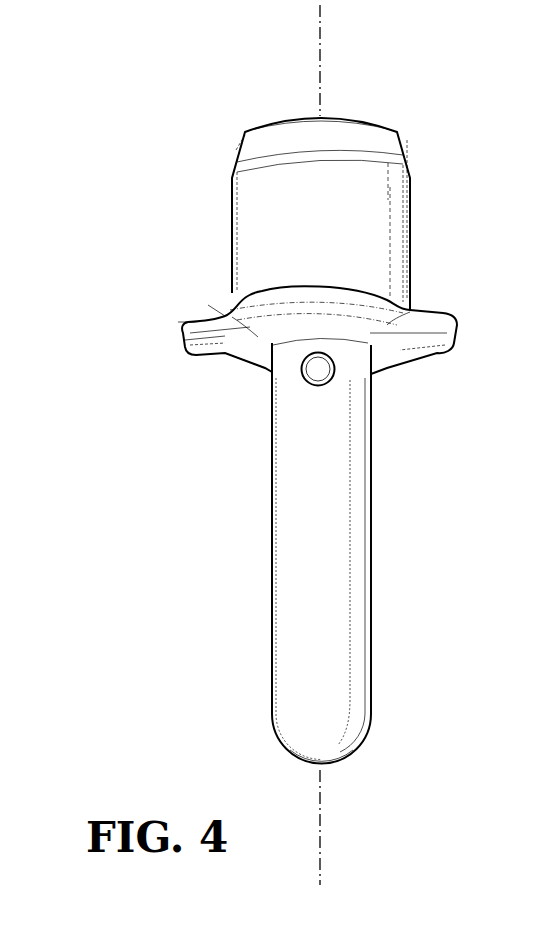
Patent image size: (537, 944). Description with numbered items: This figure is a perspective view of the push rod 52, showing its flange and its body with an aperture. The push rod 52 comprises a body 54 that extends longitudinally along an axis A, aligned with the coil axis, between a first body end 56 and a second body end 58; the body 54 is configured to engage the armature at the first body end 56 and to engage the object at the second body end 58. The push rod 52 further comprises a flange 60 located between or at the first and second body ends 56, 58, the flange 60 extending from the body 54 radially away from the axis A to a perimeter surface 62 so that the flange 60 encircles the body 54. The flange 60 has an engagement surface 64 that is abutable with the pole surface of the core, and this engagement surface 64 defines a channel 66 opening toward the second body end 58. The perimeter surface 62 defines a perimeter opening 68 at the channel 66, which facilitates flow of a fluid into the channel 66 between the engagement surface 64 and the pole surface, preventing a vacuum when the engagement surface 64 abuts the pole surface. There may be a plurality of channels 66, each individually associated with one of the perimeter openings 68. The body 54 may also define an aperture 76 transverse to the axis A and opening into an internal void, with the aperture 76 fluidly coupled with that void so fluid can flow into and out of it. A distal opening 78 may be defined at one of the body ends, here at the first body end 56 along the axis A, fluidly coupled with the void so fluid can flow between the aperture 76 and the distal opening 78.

The axis A is at (320, 50).
The push rod 52 is at (176, 104).
The body 54 is at (380, 220).
The first body end 56 is at (270, 89).
The second body end 58 is at (344, 783).
The flange 60 is at (450, 333).
The perimeter surface 62 is at (186, 340).
The engagement surface 64 is at (230, 360).
The channel 66 is at (206, 302).
The perimeter opening 68 is at (177, 319).
The aperture 76 is at (316, 372).
The distal opening 78 is at (364, 105).